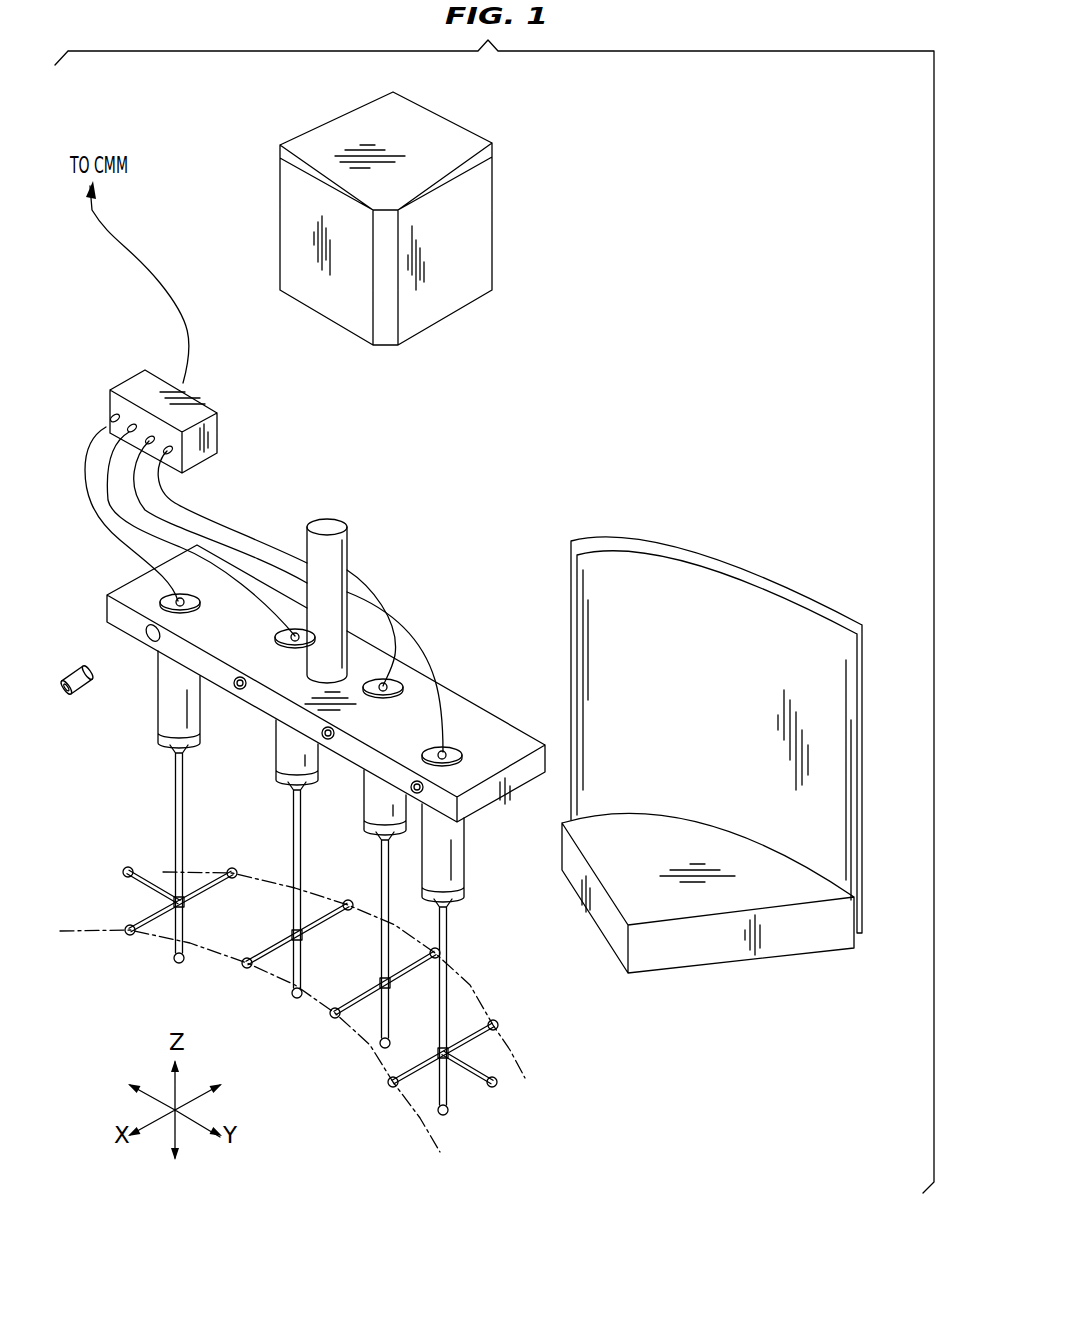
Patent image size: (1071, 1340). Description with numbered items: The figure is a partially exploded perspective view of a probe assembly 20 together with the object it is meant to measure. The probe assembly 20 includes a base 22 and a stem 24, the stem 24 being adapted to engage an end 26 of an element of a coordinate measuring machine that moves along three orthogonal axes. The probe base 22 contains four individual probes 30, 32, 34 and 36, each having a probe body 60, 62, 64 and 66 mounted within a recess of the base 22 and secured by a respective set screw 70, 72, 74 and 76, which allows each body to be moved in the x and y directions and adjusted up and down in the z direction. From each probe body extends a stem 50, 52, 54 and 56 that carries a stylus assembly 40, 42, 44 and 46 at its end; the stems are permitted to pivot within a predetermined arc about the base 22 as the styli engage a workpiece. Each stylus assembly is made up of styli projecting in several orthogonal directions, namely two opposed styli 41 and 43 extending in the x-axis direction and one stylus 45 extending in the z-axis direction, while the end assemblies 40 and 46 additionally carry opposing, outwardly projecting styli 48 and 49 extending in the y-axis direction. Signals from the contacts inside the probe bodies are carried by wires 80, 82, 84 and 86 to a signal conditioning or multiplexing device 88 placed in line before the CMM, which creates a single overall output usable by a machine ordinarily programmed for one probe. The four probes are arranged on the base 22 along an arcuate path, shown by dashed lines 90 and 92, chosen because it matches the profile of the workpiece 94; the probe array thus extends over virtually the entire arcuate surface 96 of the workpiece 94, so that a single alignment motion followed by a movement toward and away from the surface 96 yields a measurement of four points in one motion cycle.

The probe assembly 20 is at (330, 850).
The probe base 22 is at (326, 683).
The stem 24 is at (342, 553).
The end of CMM element 26 is at (468, 237).
The probe 30 is at (151, 830).
The probe 32 is at (273, 880).
The probe 34 is at (372, 936).
The probe 36 is at (442, 986).
The stylus assembly 40 is at (162, 952).
The stylus assembly 42 is at (280, 983).
The stylus assembly 44 is at (367, 1037).
The stylus assembly 46 is at (430, 1105).
The stylus 41 is at (115, 931).
The stylus 43 is at (228, 866).
The stylus 45 is at (185, 931).
The stylus 48 is at (133, 867).
The stylus 49 is at (500, 1060).
The stem 50 is at (178, 813).
The stem 52 is at (290, 903).
The stem 54 is at (378, 945).
The stem 56 is at (450, 927).
The probe body 60 is at (168, 688).
The probe body 62 is at (290, 752).
The probe body 64 is at (372, 782).
The probe body 66 is at (452, 842).
The set screw 70 is at (80, 670).
The set screw 72 is at (237, 680).
The set screw 74 is at (326, 727).
The set screw 76 is at (414, 781).
The wire 80 is at (100, 525).
The wire 82 is at (96, 430).
The wire 84 is at (242, 552).
The wire 86 is at (180, 492).
The signal conditioning or multiplexing device 88 is at (137, 387).
The dashed line 90 is at (440, 1157).
The dashed line 92 is at (536, 1072).
The workpiece 94 is at (743, 736).
The arcuate surface 96 is at (706, 586).